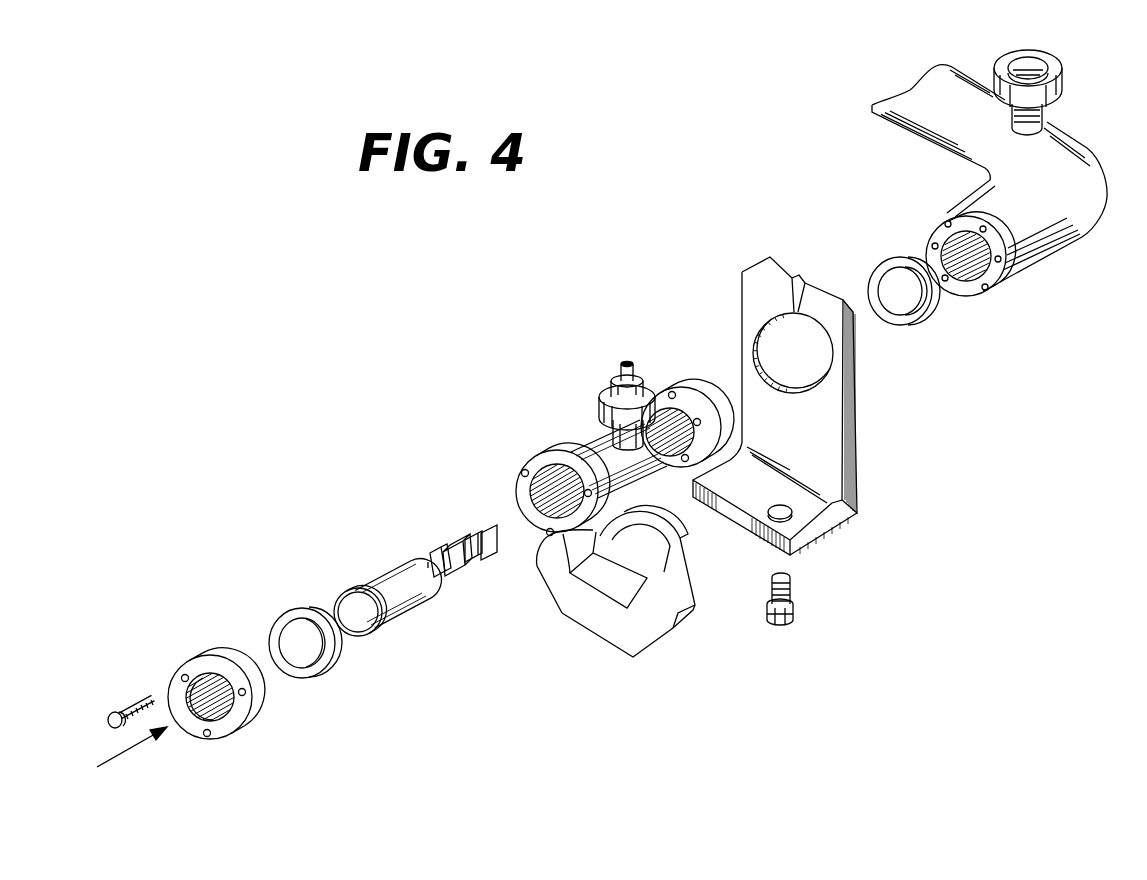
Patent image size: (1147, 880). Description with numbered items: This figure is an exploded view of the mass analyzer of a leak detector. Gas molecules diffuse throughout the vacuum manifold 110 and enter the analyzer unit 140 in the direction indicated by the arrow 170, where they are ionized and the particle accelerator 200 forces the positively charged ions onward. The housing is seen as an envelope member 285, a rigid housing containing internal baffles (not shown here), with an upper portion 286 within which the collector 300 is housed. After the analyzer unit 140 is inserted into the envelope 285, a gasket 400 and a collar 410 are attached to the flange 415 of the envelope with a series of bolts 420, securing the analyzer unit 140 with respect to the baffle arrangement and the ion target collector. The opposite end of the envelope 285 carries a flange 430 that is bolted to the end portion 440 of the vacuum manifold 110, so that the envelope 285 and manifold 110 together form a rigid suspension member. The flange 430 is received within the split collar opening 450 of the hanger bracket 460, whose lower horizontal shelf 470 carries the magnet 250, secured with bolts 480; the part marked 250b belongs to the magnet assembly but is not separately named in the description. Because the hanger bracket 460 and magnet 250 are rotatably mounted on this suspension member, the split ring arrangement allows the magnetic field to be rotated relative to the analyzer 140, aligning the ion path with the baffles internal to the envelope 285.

The vacuum manifold 110 is at (1072, 158).
The analyzer unit 140 is at (377, 572).
The arrow 170 is at (112, 760).
The particle accelerator 200 is at (452, 546).
The magnet 250 is at (587, 585).
The clamp arm 250b is at (573, 556).
The envelope member 285 is at (604, 444).
The upper portion 286 is at (608, 396).
The collector 300 is at (621, 379).
The gasket 400 is at (315, 623).
The collar 410 is at (210, 653).
The flange 415 is at (540, 462).
The bolts 420 is at (120, 727).
The flange 430 is at (680, 397).
The end portion 440 is at (973, 292).
The split collar opening 450 is at (823, 364).
The hanger bracket 460 is at (805, 406).
The lower horizontal shelf 470 is at (803, 508).
The bolts 480 is at (792, 605).